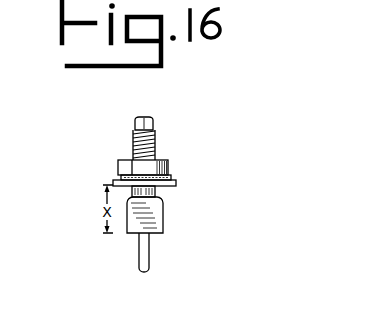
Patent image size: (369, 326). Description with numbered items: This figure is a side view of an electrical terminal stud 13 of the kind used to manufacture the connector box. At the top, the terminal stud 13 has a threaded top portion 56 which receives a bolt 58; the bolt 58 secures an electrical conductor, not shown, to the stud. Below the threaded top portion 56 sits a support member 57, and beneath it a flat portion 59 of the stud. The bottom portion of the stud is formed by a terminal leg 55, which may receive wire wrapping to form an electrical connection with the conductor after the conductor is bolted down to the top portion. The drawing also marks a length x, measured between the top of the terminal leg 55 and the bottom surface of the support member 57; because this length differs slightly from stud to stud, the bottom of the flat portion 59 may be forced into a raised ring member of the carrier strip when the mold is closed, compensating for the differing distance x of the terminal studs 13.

The terminal stud 13 is at (180, 158).
The terminal leg 55 is at (149, 251).
The threaded top portion 56 is at (153, 123).
The support member 57 is at (113, 182).
The bolt 58 is at (118, 163).
The flat portion 59 is at (163, 210).